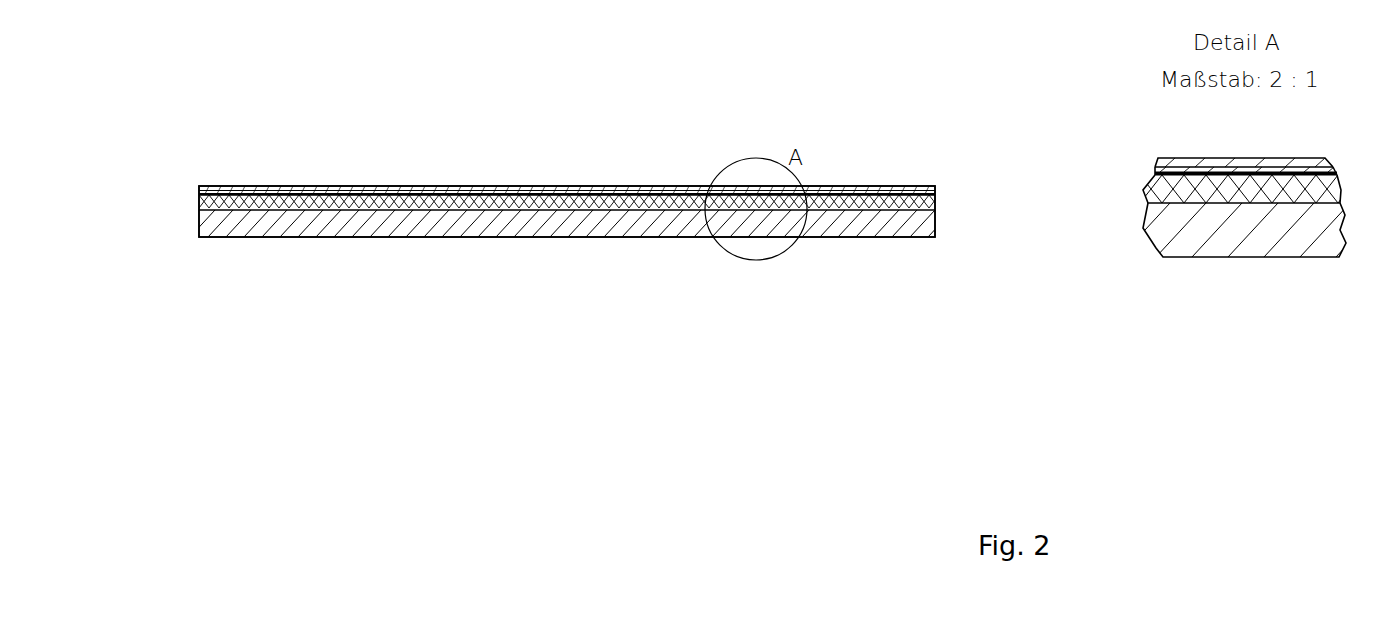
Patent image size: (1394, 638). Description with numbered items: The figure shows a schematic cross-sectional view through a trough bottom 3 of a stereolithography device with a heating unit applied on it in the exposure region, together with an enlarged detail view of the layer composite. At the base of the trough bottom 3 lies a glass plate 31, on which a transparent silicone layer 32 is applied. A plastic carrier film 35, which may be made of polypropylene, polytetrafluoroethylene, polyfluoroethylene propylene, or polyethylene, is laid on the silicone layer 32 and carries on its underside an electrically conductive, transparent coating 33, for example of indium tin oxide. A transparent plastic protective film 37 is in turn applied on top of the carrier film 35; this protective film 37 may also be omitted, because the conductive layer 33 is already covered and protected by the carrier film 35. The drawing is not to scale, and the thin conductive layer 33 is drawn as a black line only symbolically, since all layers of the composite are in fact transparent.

The trough bottom 3 is at (193, 213).
The glass plate 31 is at (840, 238).
The transparent silicone layer 32 is at (935, 204).
The electrically conductive, transparent coating 33 is at (1155, 173).
The plastic carrier film 35 is at (1155, 168).
The transparent plastic protective film 37 is at (1240, 157).